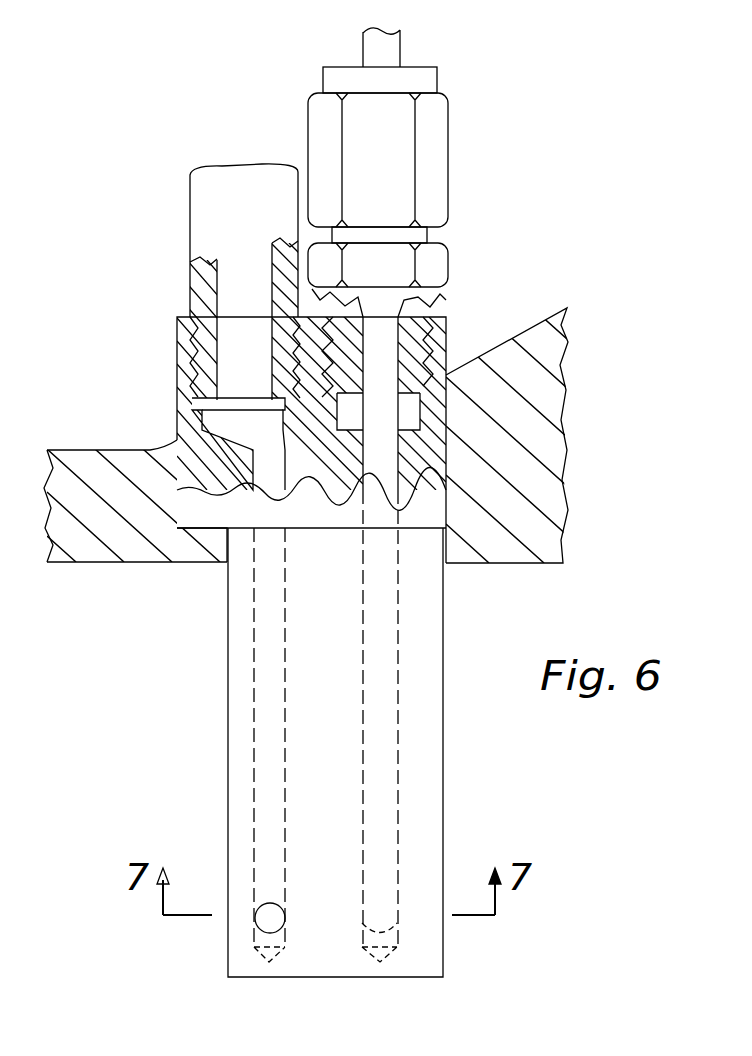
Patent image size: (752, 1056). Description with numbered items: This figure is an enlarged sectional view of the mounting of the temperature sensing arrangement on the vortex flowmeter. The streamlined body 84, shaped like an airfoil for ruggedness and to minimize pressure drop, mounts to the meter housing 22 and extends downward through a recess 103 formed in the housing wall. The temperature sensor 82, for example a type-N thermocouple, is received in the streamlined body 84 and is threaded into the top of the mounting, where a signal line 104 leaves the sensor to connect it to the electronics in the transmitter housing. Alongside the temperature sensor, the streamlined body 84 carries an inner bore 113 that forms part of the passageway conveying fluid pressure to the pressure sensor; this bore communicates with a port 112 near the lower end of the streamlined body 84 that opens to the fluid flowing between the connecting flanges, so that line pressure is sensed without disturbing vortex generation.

The signal line 104 is at (400, 38).
The temperature sensor 82 is at (430, 310).
The meter housing 22 is at (515, 340).
The recess 103 is at (228, 556).
The inner bore 113 is at (248, 731).
The streamlined body 84 is at (444, 766).
The port 112 is at (264, 918).